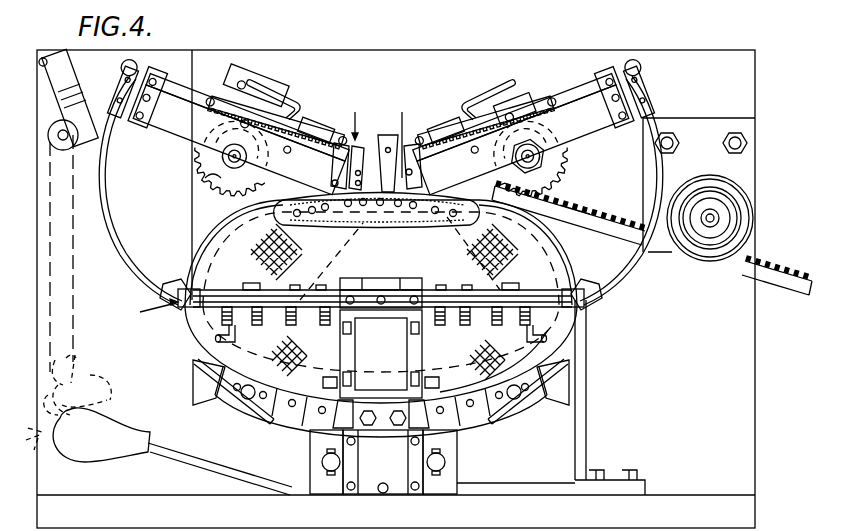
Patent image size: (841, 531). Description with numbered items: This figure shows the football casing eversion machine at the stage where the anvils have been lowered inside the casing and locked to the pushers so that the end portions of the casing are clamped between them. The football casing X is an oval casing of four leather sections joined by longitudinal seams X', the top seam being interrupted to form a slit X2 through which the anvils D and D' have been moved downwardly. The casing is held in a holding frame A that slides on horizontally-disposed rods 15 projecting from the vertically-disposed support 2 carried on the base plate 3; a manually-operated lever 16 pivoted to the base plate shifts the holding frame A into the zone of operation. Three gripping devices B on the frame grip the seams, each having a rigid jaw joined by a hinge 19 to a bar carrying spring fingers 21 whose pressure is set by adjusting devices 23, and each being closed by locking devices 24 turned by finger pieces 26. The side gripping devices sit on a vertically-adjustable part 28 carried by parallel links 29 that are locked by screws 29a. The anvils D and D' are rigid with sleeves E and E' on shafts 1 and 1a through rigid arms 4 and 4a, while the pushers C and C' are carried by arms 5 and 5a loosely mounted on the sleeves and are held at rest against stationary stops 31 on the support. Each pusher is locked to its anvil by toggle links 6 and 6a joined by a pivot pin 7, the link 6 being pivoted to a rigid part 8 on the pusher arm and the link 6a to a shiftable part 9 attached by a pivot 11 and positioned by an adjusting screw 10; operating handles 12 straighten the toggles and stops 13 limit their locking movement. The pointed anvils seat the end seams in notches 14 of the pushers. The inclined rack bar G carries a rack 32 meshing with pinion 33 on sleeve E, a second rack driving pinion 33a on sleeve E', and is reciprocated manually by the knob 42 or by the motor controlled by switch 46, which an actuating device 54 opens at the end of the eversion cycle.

The shaft 1 is at (540, 152).
The shaft 1a is at (226, 152).
The vertically-disposed support 2 is at (356, 62).
The base plate 3 is at (104, 504).
The rigid arm 4 is at (456, 158).
The rigid arm 4a is at (333, 168).
The arm 5 is at (600, 118).
The arm 5a is at (190, 94).
The toggle link 6 is at (203, 92).
The toggle link 6a is at (318, 122).
The pivot pin 7 is at (258, 80).
The rigid part 8 is at (160, 70).
The shiftable part 9 is at (422, 168).
The adjusting screw 10 is at (381, 148).
The pivot 11 is at (370, 216).
The operating handle 12 is at (284, 97).
The stop 13 is at (292, 140).
The groove or notch 14 is at (174, 280).
The horizontally-disposed rod 15 is at (322, 462).
The manually-operated lever 16 is at (163, 458).
The hinge 19 is at (380, 284).
The spring finger 21 is at (290, 384).
The adjusting device 23 is at (290, 326).
The locking device 24 is at (255, 289).
The finger piece 26 is at (215, 360).
The vertically-adjustable part 28 is at (372, 464).
The parallel link 29 is at (420, 353).
The screw 29a is at (323, 382).
The stationary stop 31 is at (126, 60).
The rack 32 is at (640, 226).
The pinion 33 is at (570, 160).
The pinion 33a is at (212, 186).
The knob or handle 42 is at (742, 191).
The switch 46 is at (112, 402).
The actuating device 54 is at (74, 296).
The holding frame A is at (146, 310).
The gripping device B is at (548, 300).
The pusher C is at (621, 190).
The pusher C' is at (134, 190).
The anvil D is at (492, 302).
The anvil D' is at (269, 300).
The sleeve E is at (586, 195).
The sleeve E' is at (188, 170).
The rack bar G is at (354, 115).
The football casing X is at (358, 280).
The seam X' is at (374, 301).
The slit X2 is at (407, 134).